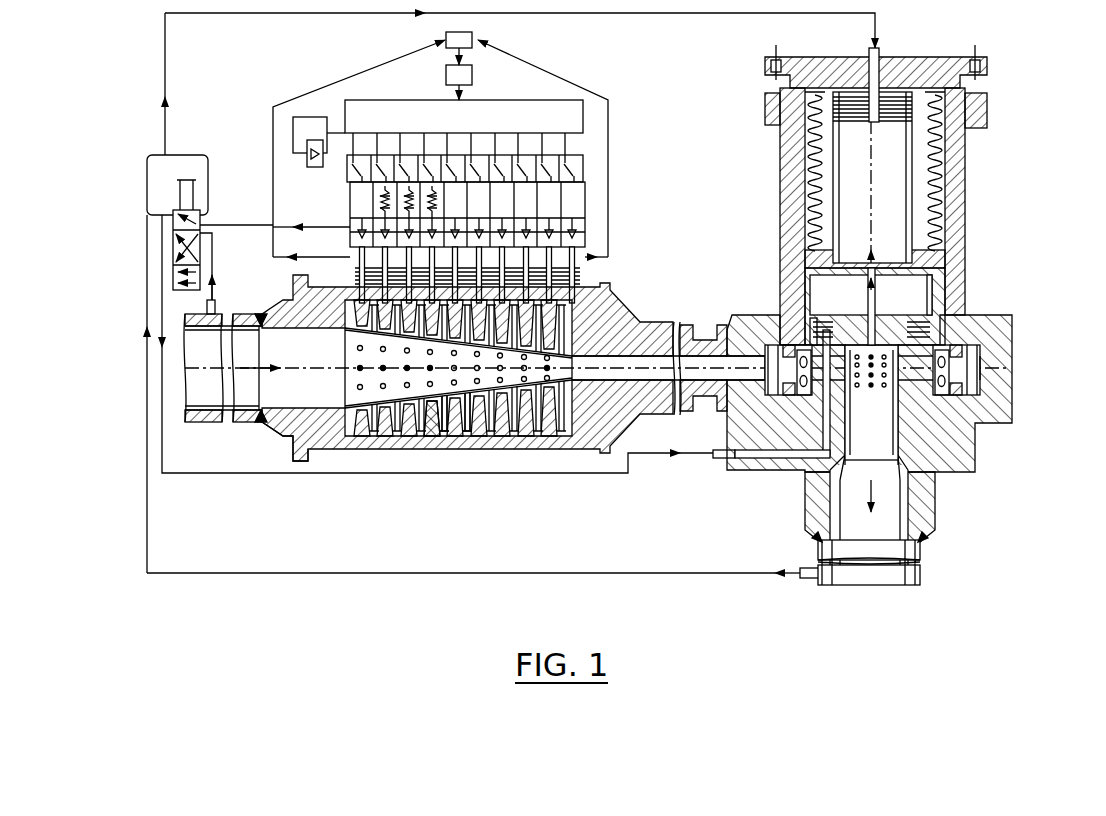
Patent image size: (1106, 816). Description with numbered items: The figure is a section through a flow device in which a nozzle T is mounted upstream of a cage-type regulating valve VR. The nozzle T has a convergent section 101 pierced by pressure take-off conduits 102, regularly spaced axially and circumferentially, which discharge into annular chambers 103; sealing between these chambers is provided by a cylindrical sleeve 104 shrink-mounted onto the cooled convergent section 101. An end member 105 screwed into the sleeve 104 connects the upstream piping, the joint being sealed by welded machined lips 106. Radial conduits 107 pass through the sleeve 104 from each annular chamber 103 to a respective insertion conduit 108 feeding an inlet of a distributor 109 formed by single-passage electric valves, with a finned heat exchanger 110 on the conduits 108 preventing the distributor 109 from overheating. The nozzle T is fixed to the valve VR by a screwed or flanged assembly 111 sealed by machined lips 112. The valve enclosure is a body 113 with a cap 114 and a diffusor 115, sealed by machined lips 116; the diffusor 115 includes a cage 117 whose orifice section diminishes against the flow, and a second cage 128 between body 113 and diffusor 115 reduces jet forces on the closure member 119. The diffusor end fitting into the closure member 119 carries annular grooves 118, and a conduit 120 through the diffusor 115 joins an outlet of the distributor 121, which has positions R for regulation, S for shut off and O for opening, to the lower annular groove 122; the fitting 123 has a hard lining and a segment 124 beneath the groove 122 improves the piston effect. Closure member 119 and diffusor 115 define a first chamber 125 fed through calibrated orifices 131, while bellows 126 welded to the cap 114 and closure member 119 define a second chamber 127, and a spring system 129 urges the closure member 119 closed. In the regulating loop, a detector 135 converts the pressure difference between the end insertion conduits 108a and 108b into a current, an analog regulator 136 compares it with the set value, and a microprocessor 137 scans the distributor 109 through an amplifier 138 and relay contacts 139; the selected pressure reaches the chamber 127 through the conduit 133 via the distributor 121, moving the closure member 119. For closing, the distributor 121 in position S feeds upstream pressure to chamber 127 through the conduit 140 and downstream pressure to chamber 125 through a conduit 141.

The convergent section 101 is at (470, 445).
The pressure take-off conduits 102 is at (415, 437).
The annular chambers 103 is at (437, 433).
The cylindrical sleeve 104 is at (535, 452).
The end member 105 is at (275, 425).
The machined lips 106 is at (300, 473).
The radial conduits 107 is at (352, 296).
The insertion conduits 108 is at (560, 235).
The end insertion conduit 108a is at (311, 242).
The end insertion conduit 108b is at (610, 240).
The distributor 109 is at (343, 205).
The heat exchanger 110 is at (585, 272).
The screwed or flanged assembly 111 is at (712, 325).
The machined lips 112 is at (678, 322).
The body 113 is at (957, 228).
The cap 114 is at (928, 57).
The diffusor 115 is at (923, 498).
The machined lips 116 is at (1012, 421).
The cage 117 is at (960, 378).
The annular grooves 118 is at (913, 318).
The closure member 119 is at (940, 262).
The conduit 120 is at (807, 352).
The distributor 121 is at (213, 218).
The lower annular groove 122 is at (773, 282).
The fitting 123 is at (930, 320).
The segment 124 is at (790, 345).
The first chamber 125 is at (877, 311).
The bellows 126 is at (808, 177).
The second chamber 127 is at (907, 177).
The second cage 128 is at (1012, 366).
The spring system 129 is at (913, 108).
The calibrated orifices 131 is at (927, 316).
The conduit 133 is at (627, 14).
The detector 135 is at (473, 32).
The analog regulator 136 is at (472, 77).
The microprocessor 137 is at (480, 132).
The amplifier 138 is at (332, 104).
The relay contacts 139 is at (590, 163).
The upstream pressure take-off conduit 140 is at (214, 270).
The conduit 141 is at (690, 573).
The regulation position R is at (173, 218).
The shut off position S is at (173, 250).
The opening position O is at (173, 283).
The nozzle T is at (590, 480).
The regulating valve VR is at (760, 480).